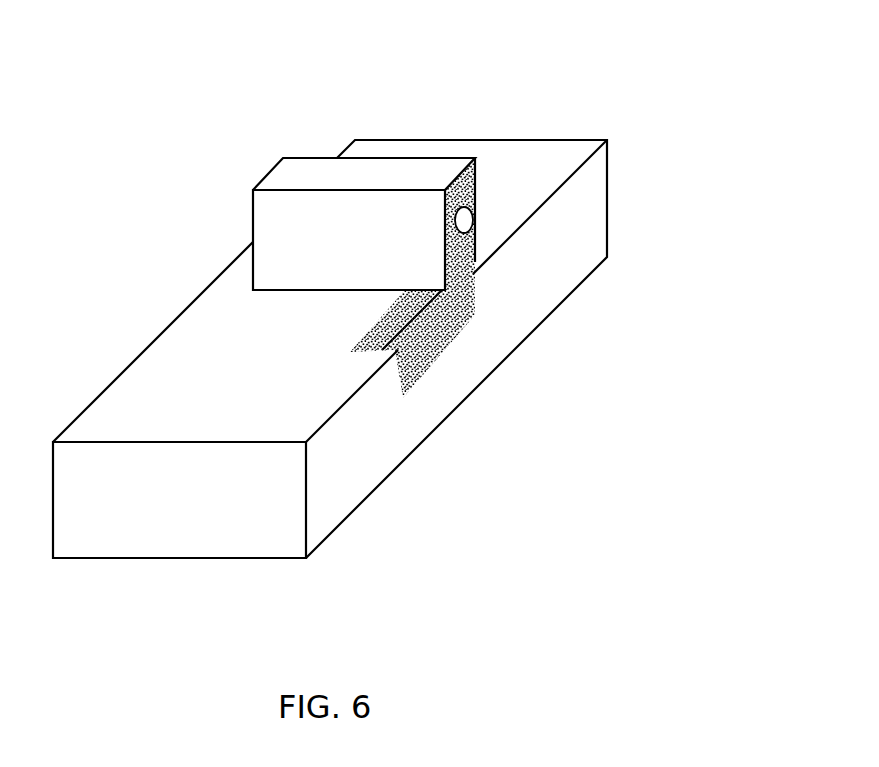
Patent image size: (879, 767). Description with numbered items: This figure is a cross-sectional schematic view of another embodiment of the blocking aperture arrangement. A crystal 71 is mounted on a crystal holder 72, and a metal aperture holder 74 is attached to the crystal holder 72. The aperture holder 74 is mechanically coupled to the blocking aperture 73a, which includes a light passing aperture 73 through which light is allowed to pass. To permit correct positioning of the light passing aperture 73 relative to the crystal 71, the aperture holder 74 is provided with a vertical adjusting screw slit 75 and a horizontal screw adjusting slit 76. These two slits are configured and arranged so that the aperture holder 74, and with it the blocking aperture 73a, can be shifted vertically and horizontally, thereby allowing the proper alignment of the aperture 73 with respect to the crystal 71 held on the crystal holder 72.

The crystal 71 is at (292, 168).
The crystal holder 72 is at (595, 200).
The light passing aperture 73 is at (470, 220).
The blocking aperture 73a is at (478, 180).
The metal aperture holder 74 is at (477, 312).
The vertical adjusting screw slit 75 is at (460, 340).
The horizontal screw adjusting slit 76 is at (392, 317).